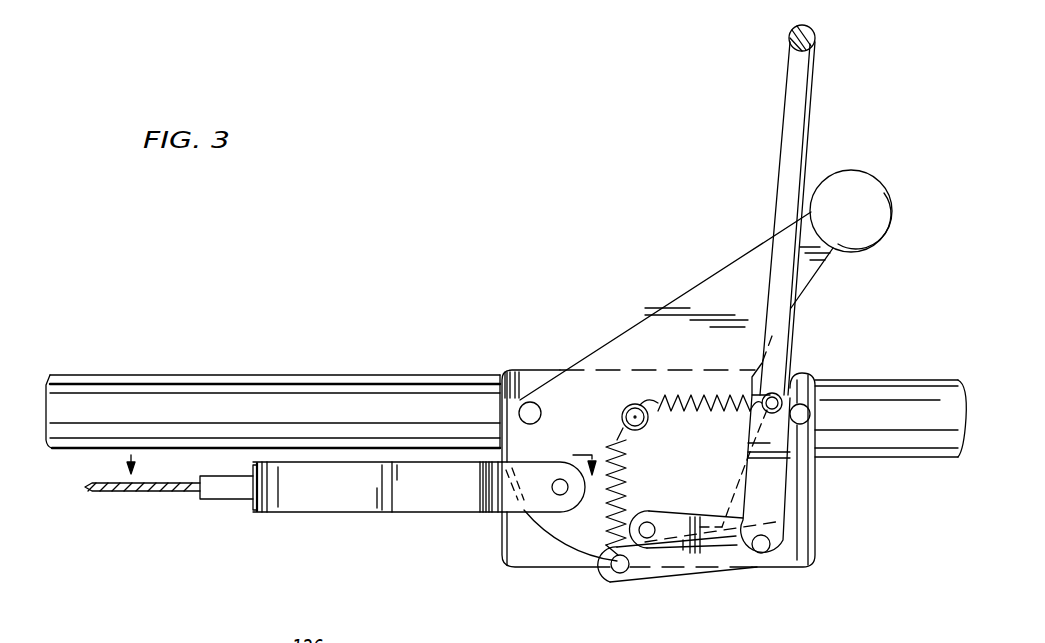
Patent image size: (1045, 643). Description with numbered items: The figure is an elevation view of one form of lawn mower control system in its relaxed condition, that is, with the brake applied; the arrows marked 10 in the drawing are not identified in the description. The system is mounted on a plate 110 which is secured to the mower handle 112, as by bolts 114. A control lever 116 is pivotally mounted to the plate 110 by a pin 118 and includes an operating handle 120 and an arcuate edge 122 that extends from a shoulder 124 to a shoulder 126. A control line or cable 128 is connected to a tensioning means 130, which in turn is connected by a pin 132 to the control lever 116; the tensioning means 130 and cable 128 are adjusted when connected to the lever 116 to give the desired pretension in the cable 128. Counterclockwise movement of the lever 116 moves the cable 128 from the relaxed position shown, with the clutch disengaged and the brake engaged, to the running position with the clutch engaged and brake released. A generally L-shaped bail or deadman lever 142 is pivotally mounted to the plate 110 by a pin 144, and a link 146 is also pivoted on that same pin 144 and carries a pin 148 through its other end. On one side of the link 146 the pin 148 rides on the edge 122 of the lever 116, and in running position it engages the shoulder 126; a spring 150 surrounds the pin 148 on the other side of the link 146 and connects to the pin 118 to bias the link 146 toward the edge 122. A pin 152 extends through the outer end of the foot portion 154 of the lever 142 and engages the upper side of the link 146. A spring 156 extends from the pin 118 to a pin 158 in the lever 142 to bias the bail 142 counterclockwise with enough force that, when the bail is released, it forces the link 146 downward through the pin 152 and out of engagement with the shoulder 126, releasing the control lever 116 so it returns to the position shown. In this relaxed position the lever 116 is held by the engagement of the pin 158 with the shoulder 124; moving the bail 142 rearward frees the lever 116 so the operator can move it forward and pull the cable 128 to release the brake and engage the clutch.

The drilling direction / device axis 10 is at (353, 456).
The plate 110 is at (817, 518).
The handle 112 is at (947, 380).
The bolts 114 is at (530, 402).
The control lever 116 is at (667, 304).
The pin 118 is at (627, 402).
The operating handle 120 is at (853, 168).
The arcuate edge 122 is at (562, 540).
The shoulder 124 is at (790, 385).
The shoulder 126 is at (505, 452).
The control cable 128 is at (128, 495).
The tensioning means 130 is at (252, 533).
The pin 132 is at (557, 495).
The bail or deadman lever 142 is at (814, 47).
The pin 144 is at (766, 553).
The link 146 is at (653, 587).
The pin 148 is at (613, 580).
The spring 150 is at (630, 455).
The pin 152 is at (647, 522).
The foot portion 154 is at (683, 556).
The spring 156 is at (705, 390).
The pin 158 is at (779, 414).